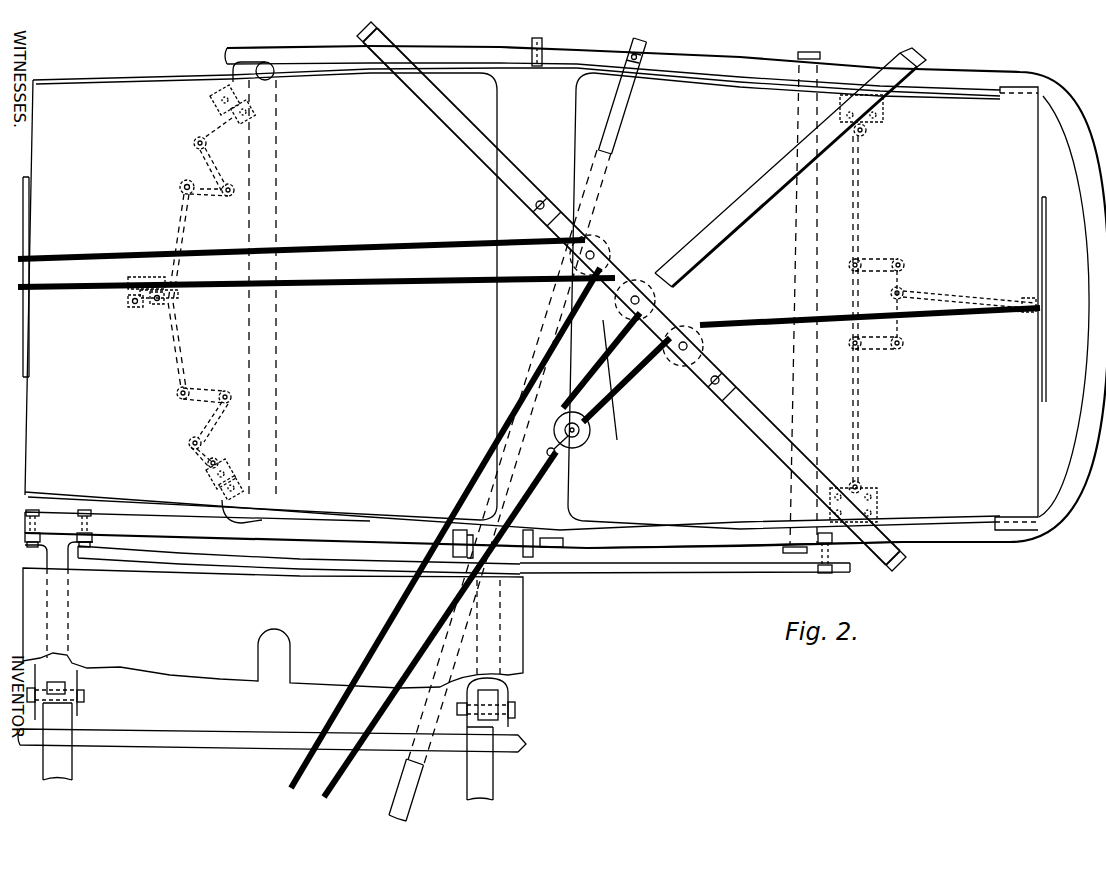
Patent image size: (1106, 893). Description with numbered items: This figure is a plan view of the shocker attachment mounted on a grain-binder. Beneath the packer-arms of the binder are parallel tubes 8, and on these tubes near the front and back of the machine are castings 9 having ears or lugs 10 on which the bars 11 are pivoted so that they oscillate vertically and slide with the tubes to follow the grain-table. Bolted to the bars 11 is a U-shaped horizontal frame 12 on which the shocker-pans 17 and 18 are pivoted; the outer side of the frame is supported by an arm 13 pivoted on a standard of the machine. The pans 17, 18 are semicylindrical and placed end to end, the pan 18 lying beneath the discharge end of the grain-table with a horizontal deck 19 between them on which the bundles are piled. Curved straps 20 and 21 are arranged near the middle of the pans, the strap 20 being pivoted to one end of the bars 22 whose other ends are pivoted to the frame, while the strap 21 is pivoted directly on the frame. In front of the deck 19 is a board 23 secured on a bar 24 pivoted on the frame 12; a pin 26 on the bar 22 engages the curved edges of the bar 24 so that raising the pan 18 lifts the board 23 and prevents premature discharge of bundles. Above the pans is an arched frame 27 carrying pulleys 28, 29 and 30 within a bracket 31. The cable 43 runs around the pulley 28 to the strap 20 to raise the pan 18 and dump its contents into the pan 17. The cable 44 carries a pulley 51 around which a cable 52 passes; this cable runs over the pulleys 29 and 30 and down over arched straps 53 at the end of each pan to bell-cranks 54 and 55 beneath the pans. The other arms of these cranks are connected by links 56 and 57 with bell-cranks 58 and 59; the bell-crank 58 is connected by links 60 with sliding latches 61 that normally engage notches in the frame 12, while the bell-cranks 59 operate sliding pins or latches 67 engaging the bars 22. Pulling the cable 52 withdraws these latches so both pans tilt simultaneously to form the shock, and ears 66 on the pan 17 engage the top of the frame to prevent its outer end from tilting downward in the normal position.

The parallel tubes 8 is at (522, 742).
The castings 9 is at (66, 760).
The ears or lugs 10 is at (60, 686).
The bars 11 is at (53, 555).
The U-shaped horizontal frame 12 is at (318, 56).
The arm 13 is at (612, 128).
The shocker-pan 17 is at (784, 301).
The shocker-pan 18 is at (512, 299).
The horizontal deck 19 is at (273, 628).
The curved strap 20 is at (262, 517).
The curved strap 21 is at (742, 524).
The bars 22 is at (441, 56).
The board 23 is at (328, 570).
The bar 24 is at (600, 573).
The pin 26 is at (458, 540).
The arched frame 27 is at (758, 428).
The pulley 28 is at (604, 244).
The pulley 29 is at (668, 298).
The pulley 30 is at (702, 348).
The bracket 31 is at (616, 270).
The cable 43 is at (368, 246).
The cable 44 is at (570, 490).
The pulley 51 is at (582, 438).
The cable 52 is at (55, 290).
The arched straps 53 is at (29, 223).
The bell-crank 54 is at (1027, 300).
The bell-crank 55 is at (146, 310).
The link 56 is at (962, 296).
The link 57 is at (178, 224).
The bell-crank 58 is at (896, 259).
The bell-crank 59 is at (206, 160).
The links 60 is at (872, 180).
The sliding latches 61 is at (886, 116).
The ears 66 is at (1022, 88).
The sliding pins or latches 67 is at (214, 112).